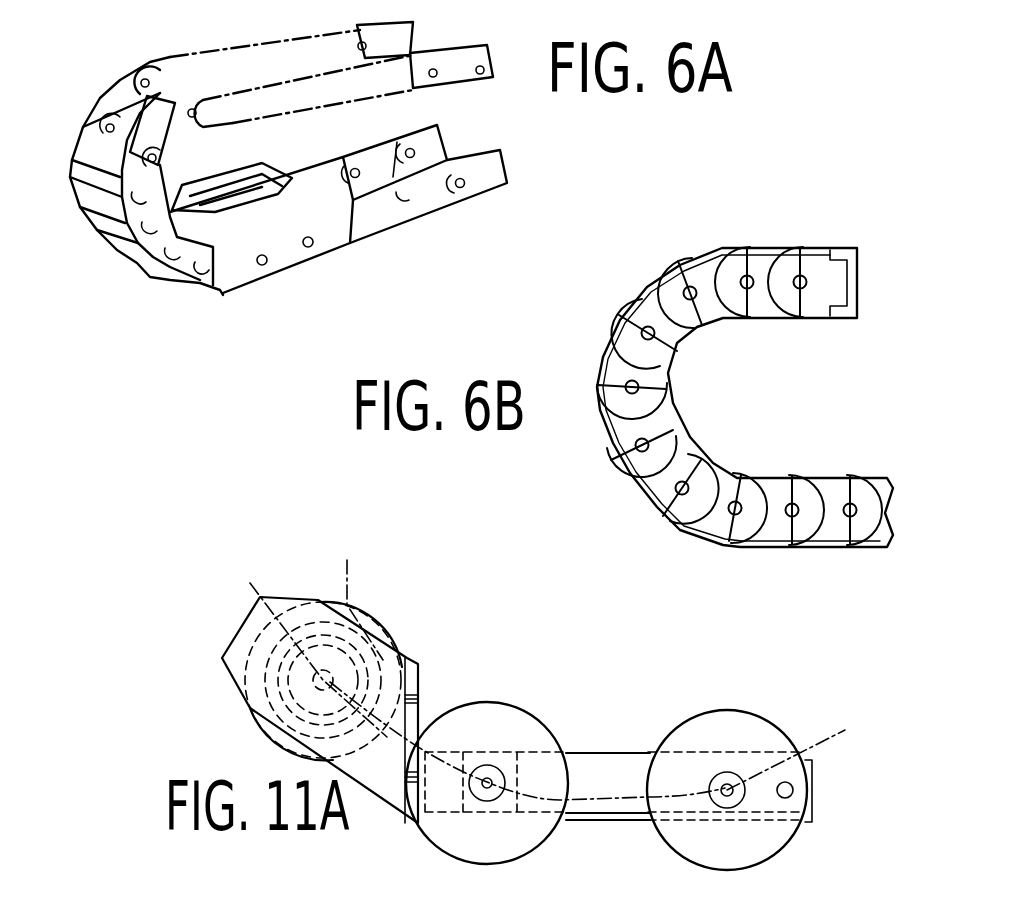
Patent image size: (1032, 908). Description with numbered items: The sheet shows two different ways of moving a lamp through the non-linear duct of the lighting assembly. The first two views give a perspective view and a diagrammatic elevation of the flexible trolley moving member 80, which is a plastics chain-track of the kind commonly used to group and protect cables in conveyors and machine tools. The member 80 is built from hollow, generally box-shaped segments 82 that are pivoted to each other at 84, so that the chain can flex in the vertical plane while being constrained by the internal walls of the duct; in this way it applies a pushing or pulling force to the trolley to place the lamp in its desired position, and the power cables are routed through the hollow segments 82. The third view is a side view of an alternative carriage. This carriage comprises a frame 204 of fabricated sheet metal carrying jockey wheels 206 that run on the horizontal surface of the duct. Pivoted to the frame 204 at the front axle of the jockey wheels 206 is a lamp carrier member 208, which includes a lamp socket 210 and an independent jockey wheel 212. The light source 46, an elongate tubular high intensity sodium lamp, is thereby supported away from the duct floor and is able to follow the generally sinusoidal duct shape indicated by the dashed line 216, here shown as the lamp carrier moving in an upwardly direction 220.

In FIG. 6A, the flexible trolley moving member 80 is at (336, 268).
In FIG. 6B, the flexible trolley moving member 80 is at (606, 319).
In FIG. 6B, the hollow box-shaped segments 82 is at (616, 390).
In FIG. 6B, the pivots 84 is at (692, 286).
In FIG. 11A, the light source 46 is at (247, 708).
In FIG. 11A, the upwardly direction 220 is at (287, 596).
In FIG. 11A, the lamp socket 210 is at (360, 591).
In FIG. 11A, the independent jockey wheel 212 is at (377, 626).
In FIG. 11A, the jockey wheels 206 is at (449, 852).
In FIG. 11A, the frame 204 is at (600, 756).
In FIG. 11A, the lamp carrier member 208 is at (420, 743).
In FIG. 11A, the generally sinusoidal duct shape 216 is at (823, 740).